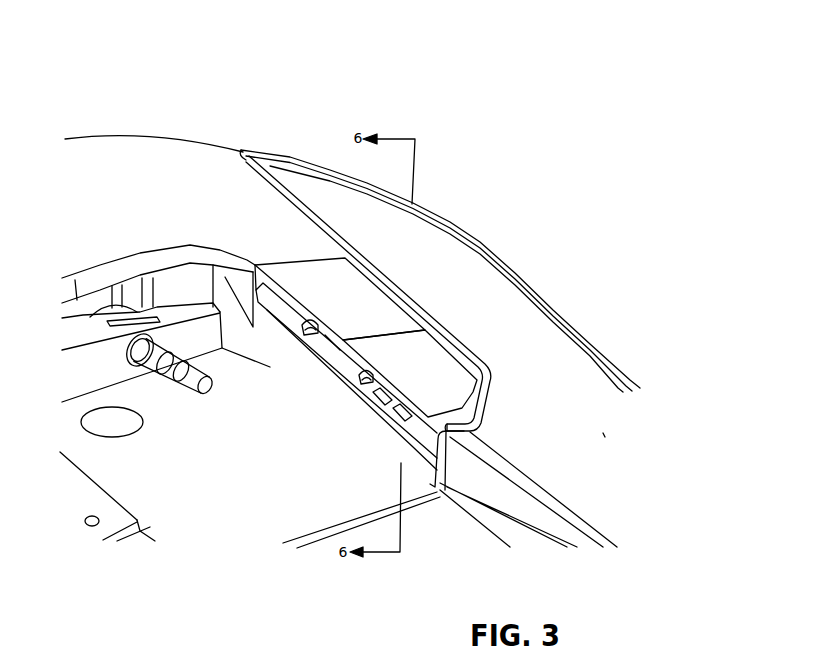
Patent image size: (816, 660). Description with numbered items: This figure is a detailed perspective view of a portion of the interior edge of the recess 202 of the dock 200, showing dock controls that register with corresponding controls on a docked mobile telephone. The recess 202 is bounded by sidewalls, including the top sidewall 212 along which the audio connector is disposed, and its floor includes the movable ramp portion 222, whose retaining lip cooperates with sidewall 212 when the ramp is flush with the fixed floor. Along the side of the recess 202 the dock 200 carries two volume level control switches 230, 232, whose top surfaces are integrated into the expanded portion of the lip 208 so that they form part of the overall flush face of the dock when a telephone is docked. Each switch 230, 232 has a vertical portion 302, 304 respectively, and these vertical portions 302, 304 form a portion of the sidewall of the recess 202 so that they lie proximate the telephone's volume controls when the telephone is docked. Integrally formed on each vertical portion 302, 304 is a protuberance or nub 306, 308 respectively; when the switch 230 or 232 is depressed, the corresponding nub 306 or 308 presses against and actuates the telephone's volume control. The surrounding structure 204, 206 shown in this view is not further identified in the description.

The dock 200 is at (165, 135).
The recess 202 is at (190, 280).
The roof opening 204 is at (603, 433).
The side rail 206 is at (316, 197).
The lip 208 is at (507, 482).
The sidewall 212 is at (89, 367).
The movable ramp portion 222 is at (198, 517).
The volume level control switch 230 is at (387, 310).
The volume level control switch 232 is at (427, 377).
The vertical portion 302 is at (288, 298).
The vertical portion 304 is at (354, 367).
The nub 306 is at (310, 312).
The nub 308 is at (368, 385).